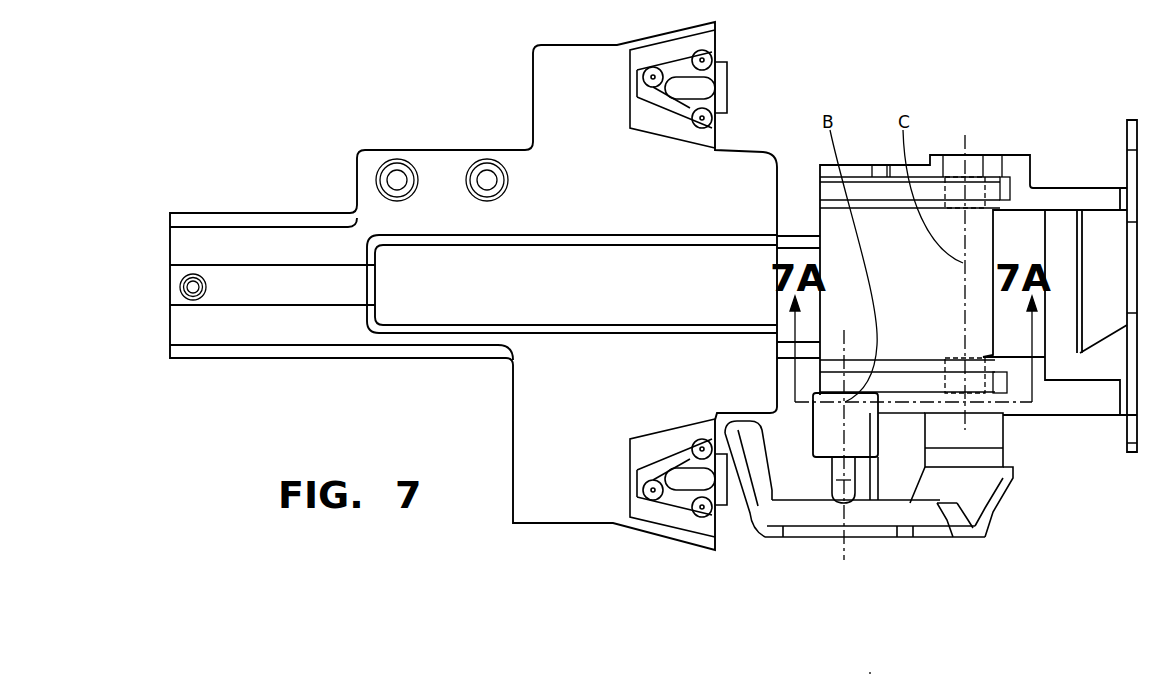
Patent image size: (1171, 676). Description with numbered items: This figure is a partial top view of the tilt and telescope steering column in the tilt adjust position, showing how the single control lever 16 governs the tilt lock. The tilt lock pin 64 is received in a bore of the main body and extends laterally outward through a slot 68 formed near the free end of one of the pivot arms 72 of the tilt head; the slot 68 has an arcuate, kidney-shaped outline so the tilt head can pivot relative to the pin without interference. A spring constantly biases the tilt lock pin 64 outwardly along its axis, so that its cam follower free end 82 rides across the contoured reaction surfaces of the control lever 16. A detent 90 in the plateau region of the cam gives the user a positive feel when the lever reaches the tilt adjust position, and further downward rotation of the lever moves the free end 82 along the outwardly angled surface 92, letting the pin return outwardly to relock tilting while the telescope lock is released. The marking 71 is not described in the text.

The control lever 16 is at (998, 510).
The tilt lock pin 64 is at (872, 475).
The slot 68 is at (822, 470).
The pivot arms 72 is at (860, 430).
The free end 82 is at (840, 502).
The detent 90 is at (952, 503).
The outwardly angled surface 92 is at (923, 512).
The section view reference 71 is at (873, 674).